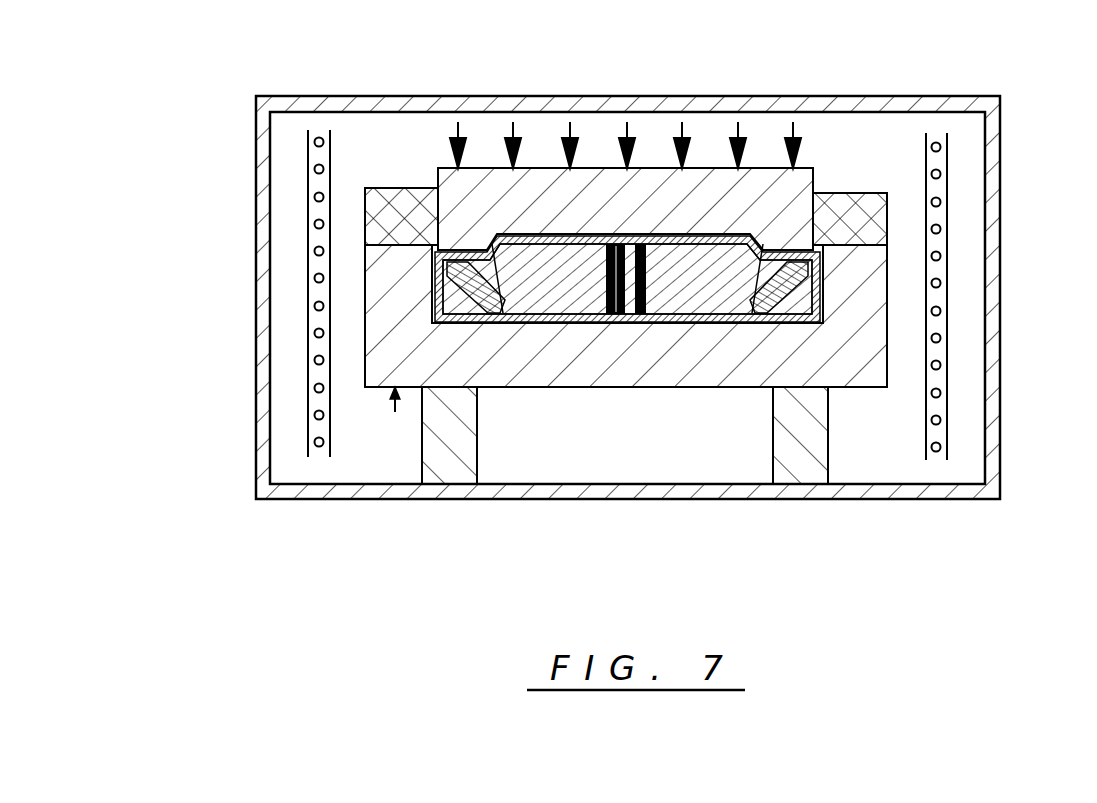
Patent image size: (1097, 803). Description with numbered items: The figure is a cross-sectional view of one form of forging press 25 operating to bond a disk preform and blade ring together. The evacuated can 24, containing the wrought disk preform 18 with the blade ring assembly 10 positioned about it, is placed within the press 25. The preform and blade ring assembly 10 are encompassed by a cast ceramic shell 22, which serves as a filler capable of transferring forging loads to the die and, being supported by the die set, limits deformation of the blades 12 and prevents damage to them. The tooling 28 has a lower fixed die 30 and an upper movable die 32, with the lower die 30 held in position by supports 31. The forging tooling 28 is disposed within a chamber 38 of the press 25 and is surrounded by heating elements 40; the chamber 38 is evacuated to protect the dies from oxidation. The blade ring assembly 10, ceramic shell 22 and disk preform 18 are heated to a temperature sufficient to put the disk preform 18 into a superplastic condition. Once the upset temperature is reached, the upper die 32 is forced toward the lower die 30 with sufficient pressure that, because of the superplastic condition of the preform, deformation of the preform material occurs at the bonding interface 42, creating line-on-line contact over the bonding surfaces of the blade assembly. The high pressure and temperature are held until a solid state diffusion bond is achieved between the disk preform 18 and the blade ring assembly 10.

The press 25 is at (985, 70).
The heating elements 40 is at (308, 268).
The chamber 38 is at (308, 418).
The cast ceramic shell 22 is at (458, 298).
The blades 12 is at (840, 243).
The lower fixed die 30 is at (696, 388).
The upper movable die 32 is at (691, 212).
The supports 31 is at (455, 463).
The wrought disk preform 18 is at (583, 257).
The evacuated can 24 is at (578, 323).
The bonding interface 42 is at (508, 287).
The blade ring assembly 10 is at (757, 325).
The tooling 28 is at (395, 412).